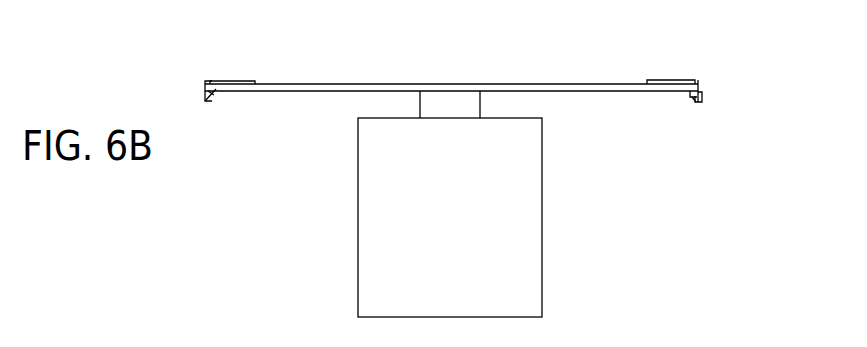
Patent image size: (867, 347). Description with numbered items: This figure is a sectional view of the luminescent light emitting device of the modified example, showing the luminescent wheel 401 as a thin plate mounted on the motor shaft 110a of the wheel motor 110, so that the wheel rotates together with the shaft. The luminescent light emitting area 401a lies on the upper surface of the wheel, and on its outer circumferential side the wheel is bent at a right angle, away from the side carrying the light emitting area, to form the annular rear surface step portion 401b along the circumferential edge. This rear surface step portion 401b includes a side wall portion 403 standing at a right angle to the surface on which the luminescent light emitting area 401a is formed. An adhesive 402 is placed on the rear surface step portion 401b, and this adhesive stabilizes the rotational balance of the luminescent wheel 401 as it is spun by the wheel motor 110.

The wheel motor 110 is at (356, 235).
The motor shaft 110a is at (428, 100).
The luminescent wheel 401 is at (699, 83).
The luminescent light emitting area 401a is at (668, 82).
The rear surface step portion 401b is at (700, 102).
The adhesive 402 is at (690, 97).
The side wall portion 403 is at (693, 102).